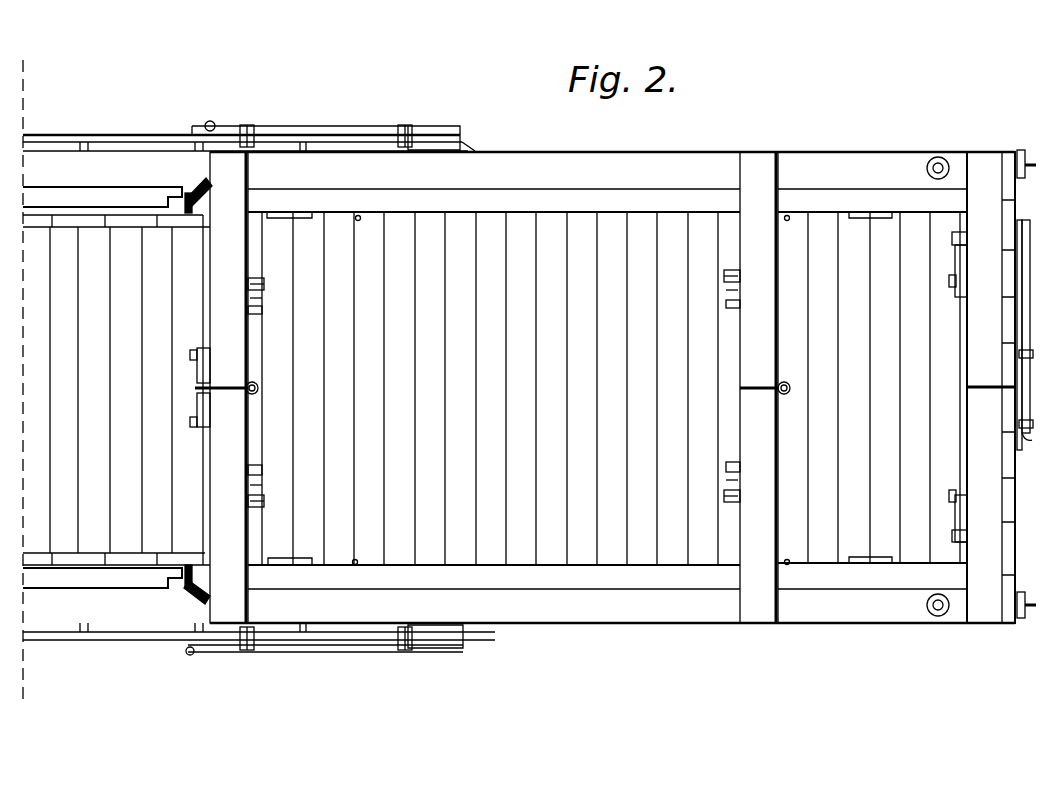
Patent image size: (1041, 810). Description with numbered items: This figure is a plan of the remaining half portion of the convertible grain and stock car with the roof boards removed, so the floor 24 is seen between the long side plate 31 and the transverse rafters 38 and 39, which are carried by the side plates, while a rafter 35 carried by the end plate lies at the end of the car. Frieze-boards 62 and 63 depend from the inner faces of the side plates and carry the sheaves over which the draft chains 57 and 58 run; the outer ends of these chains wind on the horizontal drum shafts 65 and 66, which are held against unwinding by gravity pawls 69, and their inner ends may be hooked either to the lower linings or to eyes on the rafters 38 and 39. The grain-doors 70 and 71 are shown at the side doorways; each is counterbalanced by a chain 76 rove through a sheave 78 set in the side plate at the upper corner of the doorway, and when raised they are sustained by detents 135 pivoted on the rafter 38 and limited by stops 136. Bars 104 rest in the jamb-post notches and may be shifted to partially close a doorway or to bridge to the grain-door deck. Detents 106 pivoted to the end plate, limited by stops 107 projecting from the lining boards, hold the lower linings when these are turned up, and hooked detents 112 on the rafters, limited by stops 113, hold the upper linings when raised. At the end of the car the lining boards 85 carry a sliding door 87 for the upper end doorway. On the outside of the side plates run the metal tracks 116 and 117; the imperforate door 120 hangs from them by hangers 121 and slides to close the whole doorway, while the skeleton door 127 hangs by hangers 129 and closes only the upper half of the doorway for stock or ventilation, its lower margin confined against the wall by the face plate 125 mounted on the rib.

The floor 24 is at (611, 388).
The side plate 31 is at (612, 170).
The rafter 35 is at (991, 387).
The rafter 38 is at (229, 387).
The rafter 39 is at (759, 387).
The chain 57 is at (786, 382).
The chain 58 is at (258, 388).
The frieze-board 62 is at (612, 590).
The frieze-board 63 is at (607, 205).
The drum shaft 65 is at (1022, 612).
The drum shaft 66 is at (1028, 160).
The gravity pawl 69 is at (1017, 164).
The grain-door 70 is at (90, 560).
The grain-door 71 is at (98, 230).
The chain 76 is at (188, 195).
The sheave 78 is at (208, 186).
The lining board 85 is at (1008, 305).
The sliding door 87 is at (1020, 400).
The bar 104 is at (102, 389).
The detent 106 is at (955, 262).
The stop 107 is at (952, 238).
The hooked detent 112 is at (262, 310).
The stop 113 is at (262, 298).
The metal track 116 is at (112, 640).
The metal track 117 is at (114, 142).
The imperforate door 120 is at (326, 135).
The hanger 121 is at (248, 125).
The face plate 125 is at (350, 652).
The skeleton door 127 is at (435, 636).
The hanger 129 is at (250, 627).
The detent 135 is at (208, 368).
The stop 136 is at (195, 389).